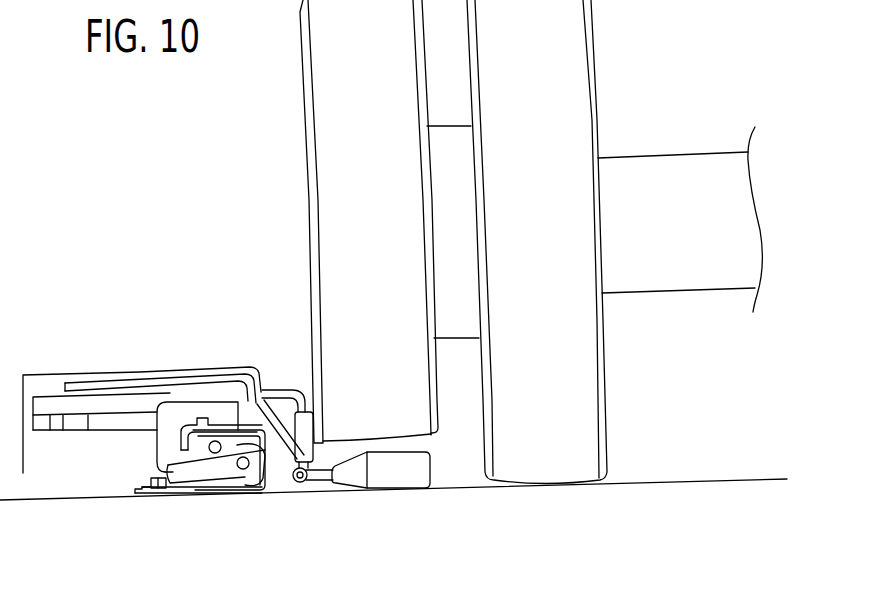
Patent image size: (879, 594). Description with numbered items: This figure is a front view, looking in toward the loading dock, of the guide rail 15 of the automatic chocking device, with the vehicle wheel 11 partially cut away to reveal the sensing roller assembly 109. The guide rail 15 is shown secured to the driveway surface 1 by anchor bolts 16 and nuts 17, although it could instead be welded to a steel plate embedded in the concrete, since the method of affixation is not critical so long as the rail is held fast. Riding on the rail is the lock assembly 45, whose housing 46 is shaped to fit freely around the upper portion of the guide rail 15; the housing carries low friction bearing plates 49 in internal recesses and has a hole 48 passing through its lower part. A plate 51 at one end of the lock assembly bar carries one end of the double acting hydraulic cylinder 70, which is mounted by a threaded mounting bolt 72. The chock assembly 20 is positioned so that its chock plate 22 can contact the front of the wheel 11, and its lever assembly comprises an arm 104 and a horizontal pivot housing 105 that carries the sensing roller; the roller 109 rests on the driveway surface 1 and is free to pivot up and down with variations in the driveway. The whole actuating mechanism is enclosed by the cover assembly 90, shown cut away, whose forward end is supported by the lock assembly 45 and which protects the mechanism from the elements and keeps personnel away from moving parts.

The driveway surface 1 is at (682, 478).
The wheel 11 is at (304, 118).
The guide rail 15 is at (135, 494).
The anchor bolts 16 is at (150, 474).
The nuts 17 is at (135, 488).
The chock assembly 20 is at (72, 431).
The chock plate 22 is at (155, 375).
The lock assembly 45 is at (160, 437).
The housing 46 is at (156, 436).
The hole 48 is at (205, 432).
The bearing plates 49 is at (206, 430).
The plate 51 is at (200, 490).
The hydraulic cylinder 70 is at (265, 490).
The threaded mounting bolt 72 is at (238, 485).
The cover assembly 90 is at (57, 375).
The arm 104 is at (283, 388).
The horizontal pivot housing 105 is at (313, 489).
The roller 109 is at (398, 493).